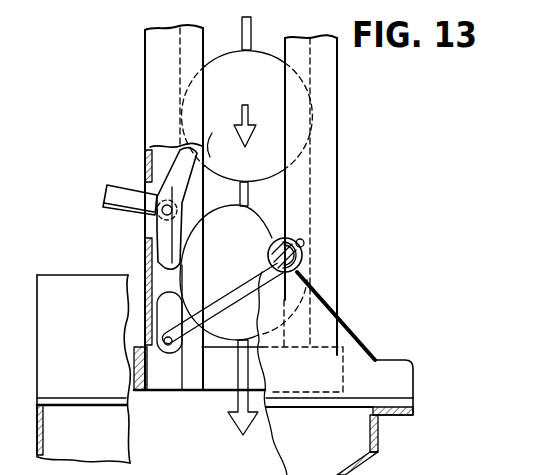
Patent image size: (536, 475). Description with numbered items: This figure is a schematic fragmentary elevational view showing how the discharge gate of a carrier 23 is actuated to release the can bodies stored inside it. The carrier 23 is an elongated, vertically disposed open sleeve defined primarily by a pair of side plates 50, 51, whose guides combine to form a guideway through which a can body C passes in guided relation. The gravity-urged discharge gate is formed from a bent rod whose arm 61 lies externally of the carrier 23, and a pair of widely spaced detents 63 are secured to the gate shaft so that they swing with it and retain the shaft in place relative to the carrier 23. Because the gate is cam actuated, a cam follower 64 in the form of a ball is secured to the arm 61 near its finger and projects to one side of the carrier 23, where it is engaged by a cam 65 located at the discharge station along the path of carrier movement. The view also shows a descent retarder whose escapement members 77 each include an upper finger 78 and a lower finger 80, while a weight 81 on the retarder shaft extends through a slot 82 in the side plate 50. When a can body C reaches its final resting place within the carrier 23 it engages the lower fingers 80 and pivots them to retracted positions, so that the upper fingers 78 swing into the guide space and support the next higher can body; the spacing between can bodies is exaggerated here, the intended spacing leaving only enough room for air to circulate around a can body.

The side plate 50 is at (145, 108).
The side plate 51 is at (338, 122).
The can body C is at (275, 150).
The upper finger 78 is at (231, 131).
The carrier 23 is at (343, 219).
The weight 81 is at (103, 193).
The slot 82 is at (140, 226).
The escapement member 77 is at (152, 252).
The lower finger 80 is at (193, 254).
The arm 61 is at (189, 295).
The detent 63 is at (167, 302).
The cam follower 64 is at (302, 260).
The cam 65 is at (344, 336).